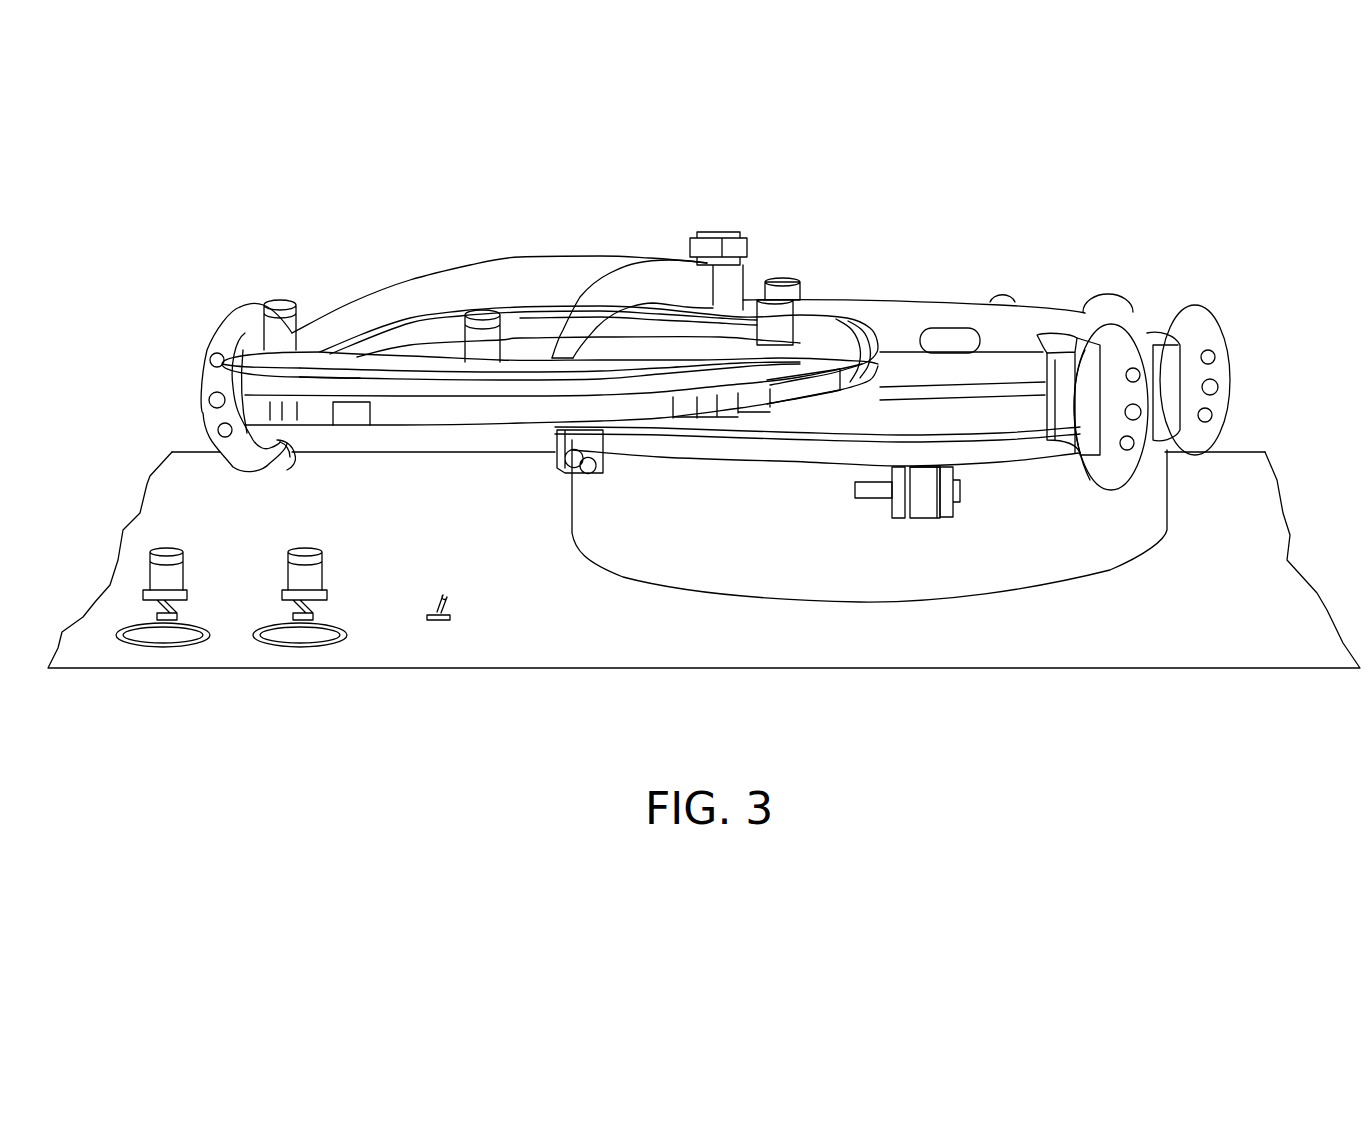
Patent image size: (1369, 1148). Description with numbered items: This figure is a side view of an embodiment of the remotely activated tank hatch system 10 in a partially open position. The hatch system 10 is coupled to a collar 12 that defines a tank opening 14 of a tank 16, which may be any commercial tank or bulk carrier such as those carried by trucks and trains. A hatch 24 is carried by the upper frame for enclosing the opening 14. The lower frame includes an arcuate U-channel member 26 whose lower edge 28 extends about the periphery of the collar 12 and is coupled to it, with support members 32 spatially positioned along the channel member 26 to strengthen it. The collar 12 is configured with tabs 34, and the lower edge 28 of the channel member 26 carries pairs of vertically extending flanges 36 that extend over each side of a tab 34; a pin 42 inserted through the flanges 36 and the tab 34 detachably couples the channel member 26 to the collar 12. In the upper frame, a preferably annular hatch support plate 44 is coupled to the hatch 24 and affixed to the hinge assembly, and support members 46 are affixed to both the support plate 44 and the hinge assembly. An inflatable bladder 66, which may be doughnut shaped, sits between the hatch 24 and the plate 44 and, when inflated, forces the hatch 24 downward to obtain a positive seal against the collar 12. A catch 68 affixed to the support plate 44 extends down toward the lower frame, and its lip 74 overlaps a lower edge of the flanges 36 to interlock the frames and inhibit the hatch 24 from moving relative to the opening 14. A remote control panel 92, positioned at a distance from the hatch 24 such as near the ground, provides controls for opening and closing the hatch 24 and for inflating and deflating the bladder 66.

The remotely activated tank hatch system 10 is at (747, 369).
The collar 12 is at (983, 573).
The tank opening 14 is at (1008, 414).
The tank 16 is at (1243, 646).
The hatch 24 is at (540, 415).
The U-channel member 26 is at (1167, 450).
The lower edge 28 is at (687, 450).
The support members 32 is at (1233, 370).
The tabs 34 is at (923, 502).
The flanges 36 is at (893, 520).
The pin 42 is at (857, 490).
The hatch support plate 44 is at (443, 365).
The support members 46 is at (490, 275).
The inflatable bladder 66 is at (338, 388).
The catch 68 is at (240, 315).
The lip 74 is at (293, 457).
The remote control panel 92 is at (390, 642).